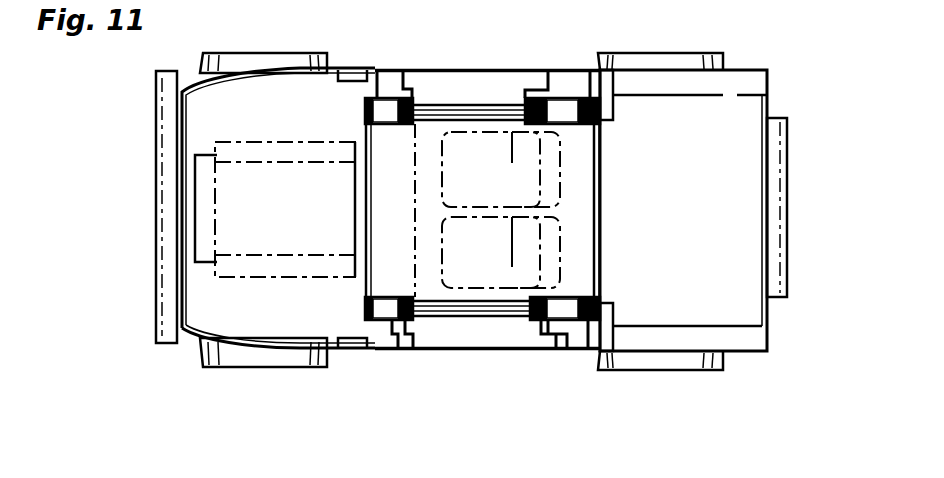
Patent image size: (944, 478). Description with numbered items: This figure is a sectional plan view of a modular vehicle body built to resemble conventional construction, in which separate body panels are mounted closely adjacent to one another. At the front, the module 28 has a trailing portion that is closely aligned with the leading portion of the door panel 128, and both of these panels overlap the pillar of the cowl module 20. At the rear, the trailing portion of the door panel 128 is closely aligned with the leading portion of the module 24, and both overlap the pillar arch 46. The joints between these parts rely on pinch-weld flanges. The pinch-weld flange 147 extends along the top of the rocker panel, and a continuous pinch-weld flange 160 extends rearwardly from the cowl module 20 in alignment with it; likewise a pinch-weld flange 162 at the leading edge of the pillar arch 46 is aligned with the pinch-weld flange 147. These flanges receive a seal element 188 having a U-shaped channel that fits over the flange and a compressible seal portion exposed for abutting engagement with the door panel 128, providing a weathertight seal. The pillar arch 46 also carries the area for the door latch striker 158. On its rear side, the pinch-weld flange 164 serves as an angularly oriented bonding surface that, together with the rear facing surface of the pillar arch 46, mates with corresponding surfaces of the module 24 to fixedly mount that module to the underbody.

The module 28 is at (340, 70).
The cowl module 20 is at (380, 96).
The door panel 128 is at (427, 78).
The pinch-weld flange 147 is at (459, 106).
The pillar arch 46 is at (561, 82).
The module 24 is at (735, 70).
The pinch-weld flange 160 is at (412, 125).
The pinch-weld flange 162 is at (541, 124).
The door latch striker 158 is at (537, 305).
The seal element 188 is at (413, 298).
The pinch-weld flange 164 is at (594, 306).